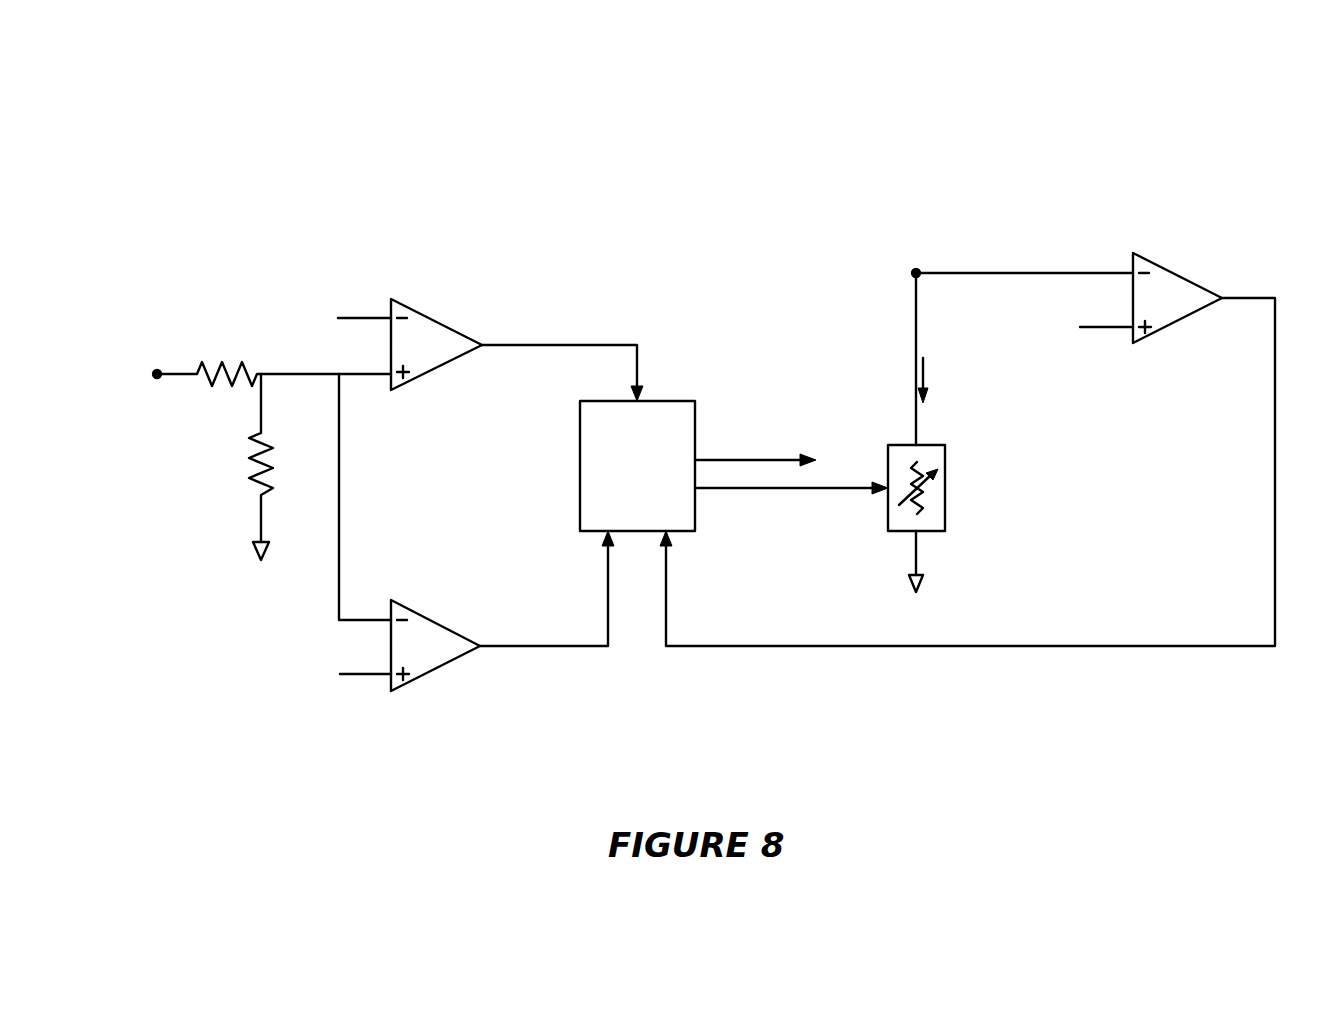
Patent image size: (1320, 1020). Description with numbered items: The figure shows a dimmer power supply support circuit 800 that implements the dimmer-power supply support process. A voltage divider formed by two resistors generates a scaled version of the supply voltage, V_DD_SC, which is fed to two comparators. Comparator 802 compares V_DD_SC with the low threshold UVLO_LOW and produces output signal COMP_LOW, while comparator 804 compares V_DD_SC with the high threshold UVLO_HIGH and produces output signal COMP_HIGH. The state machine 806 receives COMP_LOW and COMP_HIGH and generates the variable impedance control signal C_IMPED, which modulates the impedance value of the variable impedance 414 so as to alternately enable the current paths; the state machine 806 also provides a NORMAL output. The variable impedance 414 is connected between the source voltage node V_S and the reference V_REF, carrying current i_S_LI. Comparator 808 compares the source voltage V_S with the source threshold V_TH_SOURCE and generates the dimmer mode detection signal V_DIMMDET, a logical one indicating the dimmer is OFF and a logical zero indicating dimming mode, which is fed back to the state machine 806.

The dimmer power supply support circuit 800 is at (1142, 134).
The comparator 802 is at (452, 355).
The comparator 804 is at (452, 656).
The state machine 806 is at (654, 498).
The comparator 808 is at (1194, 308).
The variable impedance 414 is at (945, 478).